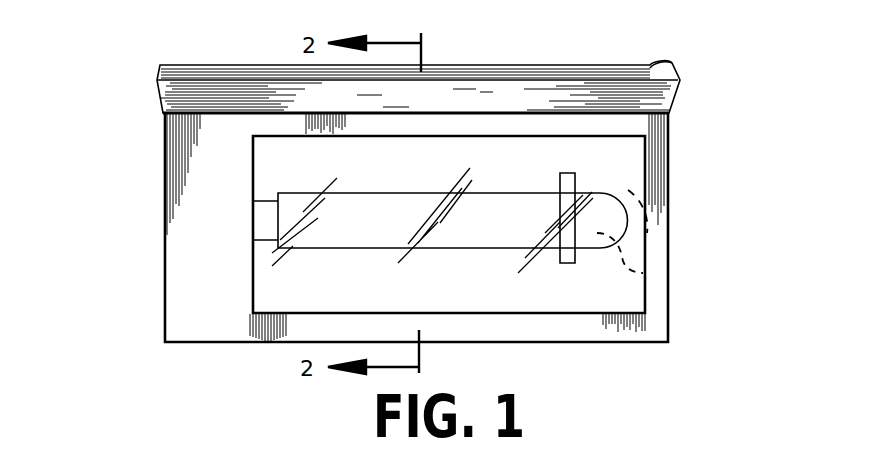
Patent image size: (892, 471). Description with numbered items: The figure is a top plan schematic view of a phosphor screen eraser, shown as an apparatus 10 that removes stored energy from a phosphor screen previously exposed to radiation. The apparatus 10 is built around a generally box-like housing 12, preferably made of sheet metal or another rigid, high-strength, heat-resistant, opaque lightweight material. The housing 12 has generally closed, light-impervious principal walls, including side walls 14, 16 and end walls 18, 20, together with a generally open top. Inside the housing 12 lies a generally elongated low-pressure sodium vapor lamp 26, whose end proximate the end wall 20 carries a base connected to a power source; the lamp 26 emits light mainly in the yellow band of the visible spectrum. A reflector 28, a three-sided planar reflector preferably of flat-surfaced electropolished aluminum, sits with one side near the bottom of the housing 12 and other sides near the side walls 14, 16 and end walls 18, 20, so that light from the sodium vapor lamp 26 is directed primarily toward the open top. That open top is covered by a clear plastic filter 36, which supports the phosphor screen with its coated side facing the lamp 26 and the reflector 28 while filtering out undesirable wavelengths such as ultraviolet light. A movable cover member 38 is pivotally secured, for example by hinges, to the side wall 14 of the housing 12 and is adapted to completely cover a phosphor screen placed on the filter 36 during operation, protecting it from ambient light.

The apparatus 10 is at (105, 115).
The housing 12 is at (183, 300).
The side wall 14 is at (446, 112).
The side wall 16 is at (505, 343).
The end wall 18 is at (672, 148).
The end wall 20 is at (165, 185).
The sodium vapor lamp 26 is at (643, 273).
The reflector 28 is at (645, 236).
The filter 36 is at (628, 165).
The cover member 38 is at (672, 63).